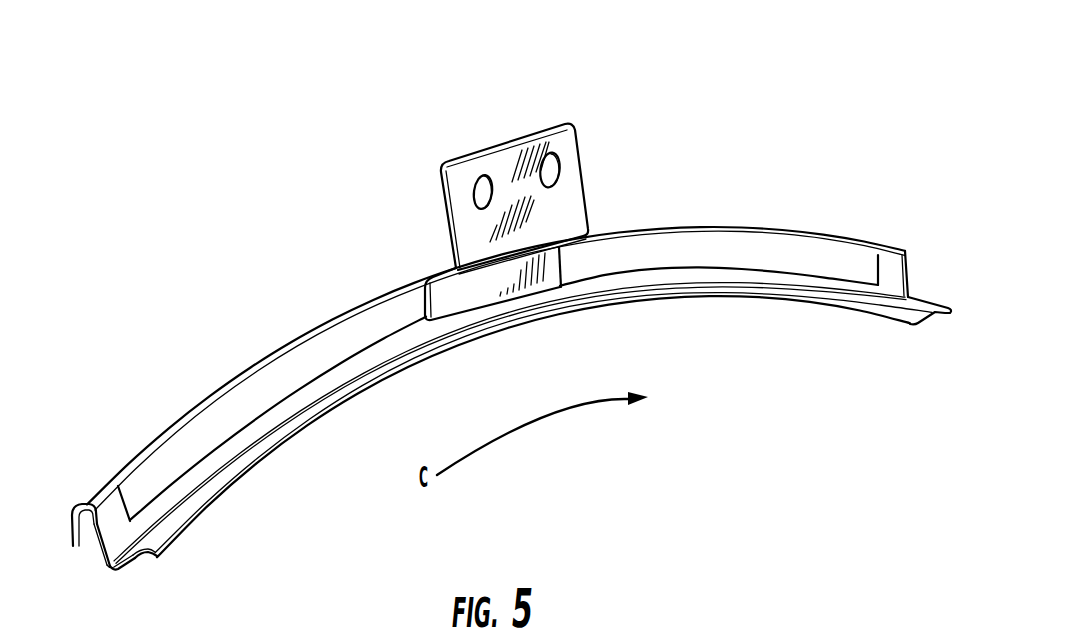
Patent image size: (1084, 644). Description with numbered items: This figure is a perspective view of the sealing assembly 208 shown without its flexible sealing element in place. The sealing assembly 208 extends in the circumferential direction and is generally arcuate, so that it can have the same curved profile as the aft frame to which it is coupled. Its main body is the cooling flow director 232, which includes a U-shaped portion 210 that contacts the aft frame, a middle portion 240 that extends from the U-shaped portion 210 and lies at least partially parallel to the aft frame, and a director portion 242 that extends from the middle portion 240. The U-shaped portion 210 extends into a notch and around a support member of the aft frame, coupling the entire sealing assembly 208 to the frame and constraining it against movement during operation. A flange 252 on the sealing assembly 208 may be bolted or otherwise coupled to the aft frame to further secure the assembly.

The sealing assembly 208 is at (770, 118).
The U-shaped portion 210 is at (84, 505).
The cooling flow director 232 is at (102, 563).
The middle portion 240 is at (113, 569).
The director portion 242 is at (153, 556).
The flange 252 is at (453, 177).